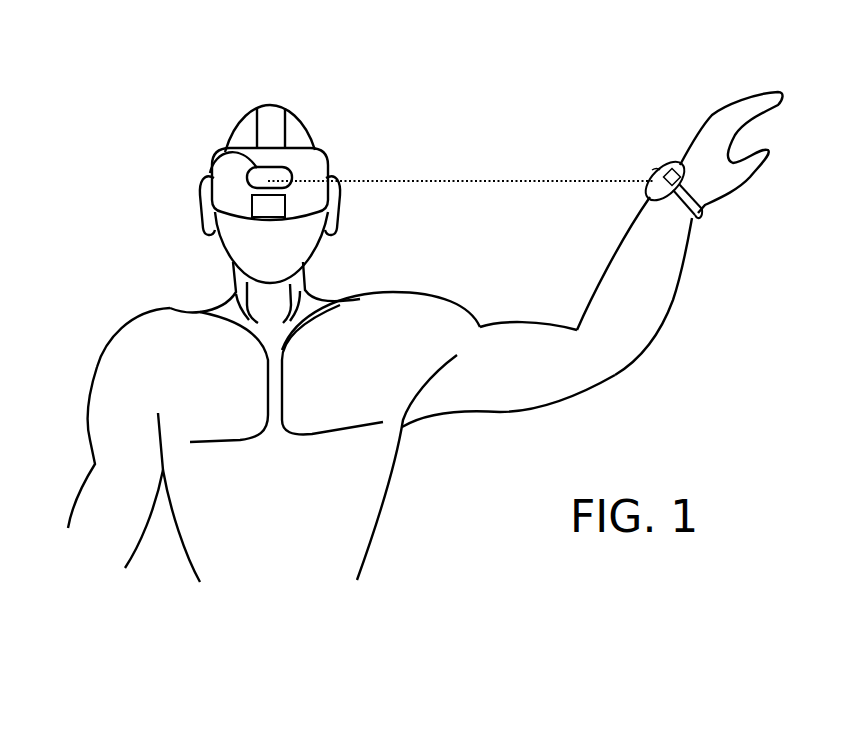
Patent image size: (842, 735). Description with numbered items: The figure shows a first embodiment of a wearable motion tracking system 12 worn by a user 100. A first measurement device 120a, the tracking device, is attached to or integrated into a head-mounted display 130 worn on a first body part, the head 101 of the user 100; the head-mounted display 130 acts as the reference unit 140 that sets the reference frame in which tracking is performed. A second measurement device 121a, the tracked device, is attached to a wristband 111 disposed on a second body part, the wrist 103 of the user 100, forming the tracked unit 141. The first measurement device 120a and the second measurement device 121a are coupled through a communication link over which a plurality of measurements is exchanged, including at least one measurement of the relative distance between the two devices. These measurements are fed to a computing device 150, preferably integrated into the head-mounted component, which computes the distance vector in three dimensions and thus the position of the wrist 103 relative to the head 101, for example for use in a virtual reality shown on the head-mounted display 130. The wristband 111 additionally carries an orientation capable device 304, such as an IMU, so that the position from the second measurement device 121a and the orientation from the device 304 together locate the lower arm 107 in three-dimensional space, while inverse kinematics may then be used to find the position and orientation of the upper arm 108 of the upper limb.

The wearable motion tracking system 12 is at (231, 82).
The user 100 is at (397, 293).
The head 101 is at (308, 132).
The wrist 103 is at (707, 206).
The lower arm 107 is at (661, 301).
The upper arm 108 is at (540, 376).
The wristband 111 is at (698, 220).
The first measurement device 120a is at (222, 170).
The second measurement device 121a is at (655, 182).
The head-mounted display 130 is at (212, 173).
The reference unit 140 is at (216, 168).
The tracked unit 141 is at (655, 192).
The computing device 150 is at (264, 208).
The orientation capable device 304 is at (660, 163).